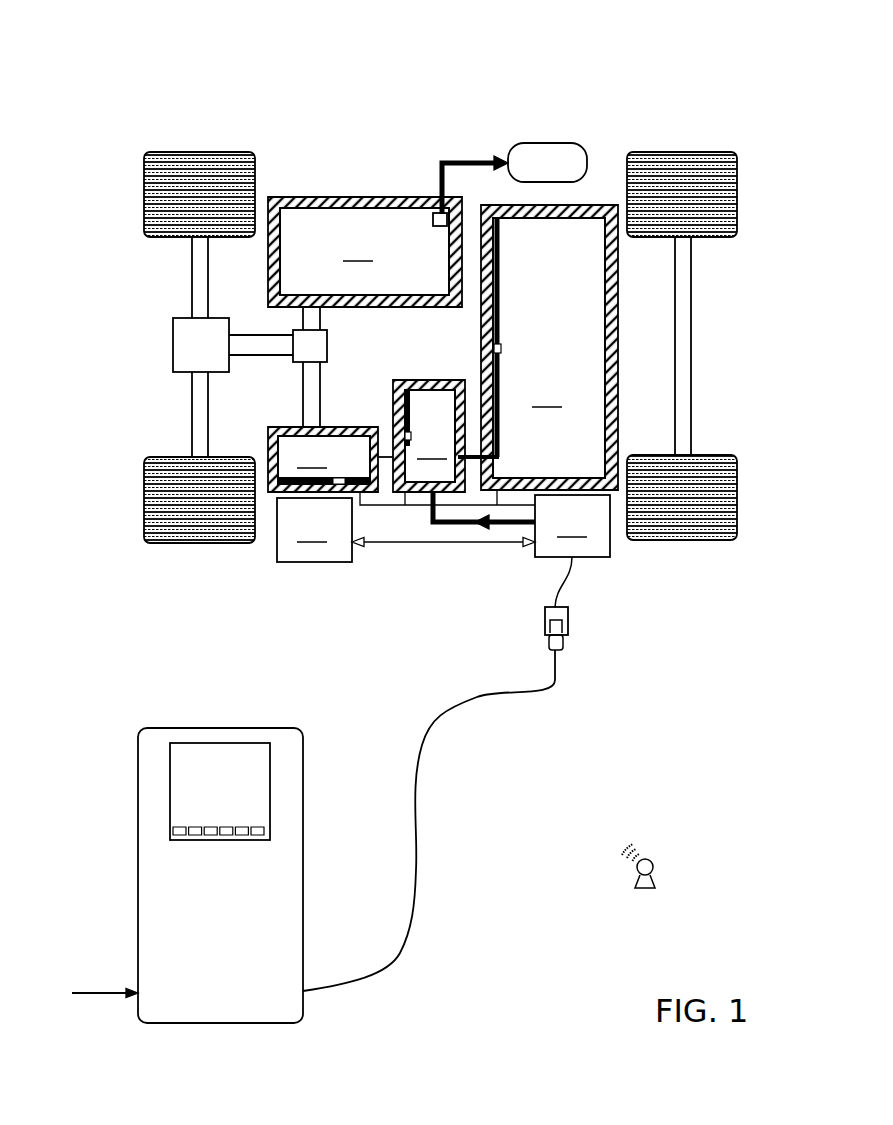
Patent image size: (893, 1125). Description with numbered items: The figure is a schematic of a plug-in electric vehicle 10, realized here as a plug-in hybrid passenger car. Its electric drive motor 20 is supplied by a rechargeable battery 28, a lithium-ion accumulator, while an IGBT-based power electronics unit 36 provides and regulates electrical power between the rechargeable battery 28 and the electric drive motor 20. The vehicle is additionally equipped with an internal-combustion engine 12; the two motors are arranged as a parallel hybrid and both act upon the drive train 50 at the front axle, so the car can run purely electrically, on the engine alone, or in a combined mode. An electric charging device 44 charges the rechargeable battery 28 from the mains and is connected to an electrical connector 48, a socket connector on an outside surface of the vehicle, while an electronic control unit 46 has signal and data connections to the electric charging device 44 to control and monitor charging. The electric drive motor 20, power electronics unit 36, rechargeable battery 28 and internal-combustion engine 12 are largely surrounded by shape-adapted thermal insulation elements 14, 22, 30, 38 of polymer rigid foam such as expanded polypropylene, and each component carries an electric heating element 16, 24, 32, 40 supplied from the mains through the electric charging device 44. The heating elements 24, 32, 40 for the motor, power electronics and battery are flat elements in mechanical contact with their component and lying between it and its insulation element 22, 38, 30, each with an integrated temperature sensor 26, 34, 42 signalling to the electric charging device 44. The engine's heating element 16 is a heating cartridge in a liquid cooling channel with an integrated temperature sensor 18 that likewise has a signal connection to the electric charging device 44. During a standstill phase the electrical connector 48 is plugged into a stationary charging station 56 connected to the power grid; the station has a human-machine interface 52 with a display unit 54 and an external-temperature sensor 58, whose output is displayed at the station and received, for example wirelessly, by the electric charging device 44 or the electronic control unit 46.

The plug-in electric vehicle 10 is at (100, 69).
The internal-combustion engine 12 is at (364, 251).
The thermal insulation element 14 is at (315, 197).
The electric heating element 16 is at (438, 202).
The temperature sensor 18 is at (437, 212).
The electric drive motor 20 is at (324, 460).
The thermal insulation element 22 is at (283, 428).
The electric heating element 24 is at (288, 480).
The temperature sensor 26 is at (341, 479).
The rechargeable battery 28 is at (549, 348).
The thermal insulation element 30 is at (615, 332).
The electric heating element 32 is at (503, 300).
The temperature sensor 34 is at (499, 348).
The power electronics unit 36 is at (416, 436).
The thermal insulation element 38 is at (398, 380).
The electric heating element 40 is at (408, 432).
The temperature sensor 42 is at (411, 434).
The electric charging device 44 is at (485, 523).
The electronic control unit 46 is at (406, 530).
The electrical connector 48 is at (570, 613).
The drive train 50 is at (145, 356).
The human-machine interface 52 is at (152, 807).
The display unit 54 is at (257, 777).
The stationary charging station 56 is at (132, 721).
The external-temperature sensor 58 is at (653, 860).